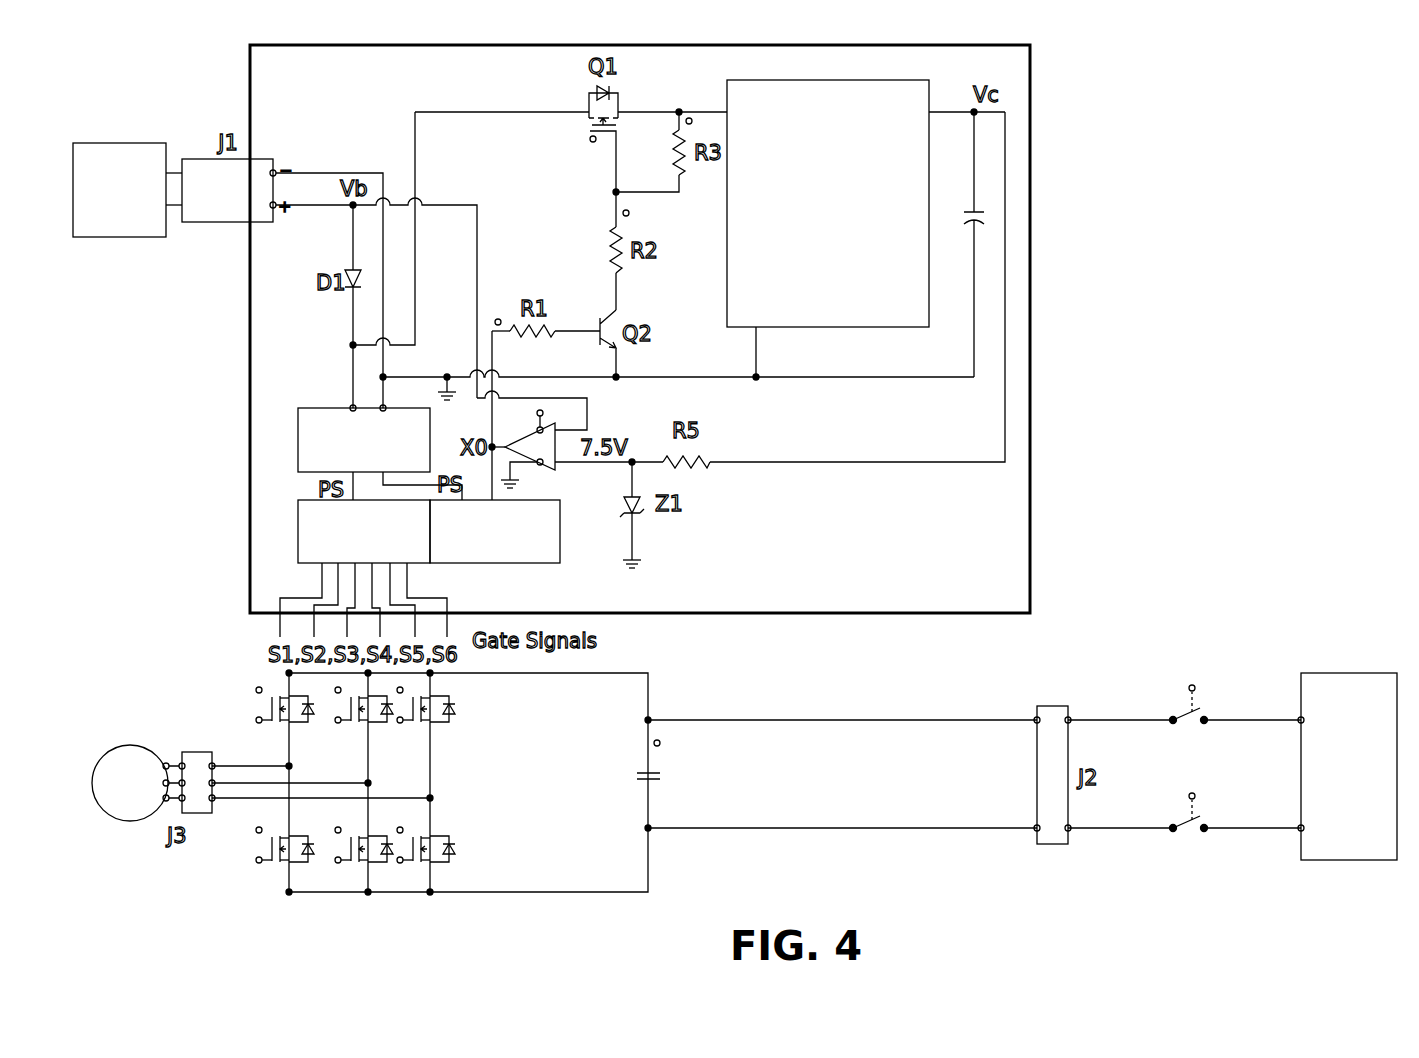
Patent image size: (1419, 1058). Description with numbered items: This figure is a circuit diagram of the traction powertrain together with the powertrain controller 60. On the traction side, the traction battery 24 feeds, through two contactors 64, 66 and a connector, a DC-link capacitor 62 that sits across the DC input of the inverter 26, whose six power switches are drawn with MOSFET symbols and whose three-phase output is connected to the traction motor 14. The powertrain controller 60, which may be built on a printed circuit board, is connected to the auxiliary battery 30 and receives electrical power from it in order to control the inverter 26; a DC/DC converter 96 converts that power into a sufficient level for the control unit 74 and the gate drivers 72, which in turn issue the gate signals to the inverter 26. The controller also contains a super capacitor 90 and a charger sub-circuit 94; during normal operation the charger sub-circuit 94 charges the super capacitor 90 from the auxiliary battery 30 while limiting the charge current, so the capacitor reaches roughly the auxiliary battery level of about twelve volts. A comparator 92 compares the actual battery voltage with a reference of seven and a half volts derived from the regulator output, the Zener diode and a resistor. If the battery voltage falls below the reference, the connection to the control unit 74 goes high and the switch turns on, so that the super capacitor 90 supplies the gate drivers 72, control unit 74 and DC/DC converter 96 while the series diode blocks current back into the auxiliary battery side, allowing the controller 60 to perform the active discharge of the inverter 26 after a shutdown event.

The traction motor 14 is at (125, 766).
The traction battery 24 is at (1343, 747).
The inverter 26 is at (449, 782).
The auxiliary battery 30 is at (119, 171).
The powertrain controller 60 is at (672, 329).
The DC-link capacitor 62 is at (673, 771).
The contactor switch 64 is at (1165, 717).
The contactor switch 66 is at (1165, 809).
The gate drivers 72 is at (314, 527).
The control unit 74 is at (495, 550).
The super capacitor 90 is at (1009, 244).
The comparator 92 is at (558, 446).
The charger sub-circuit 94 is at (828, 224).
The DC/DC converter 96 is at (314, 435).